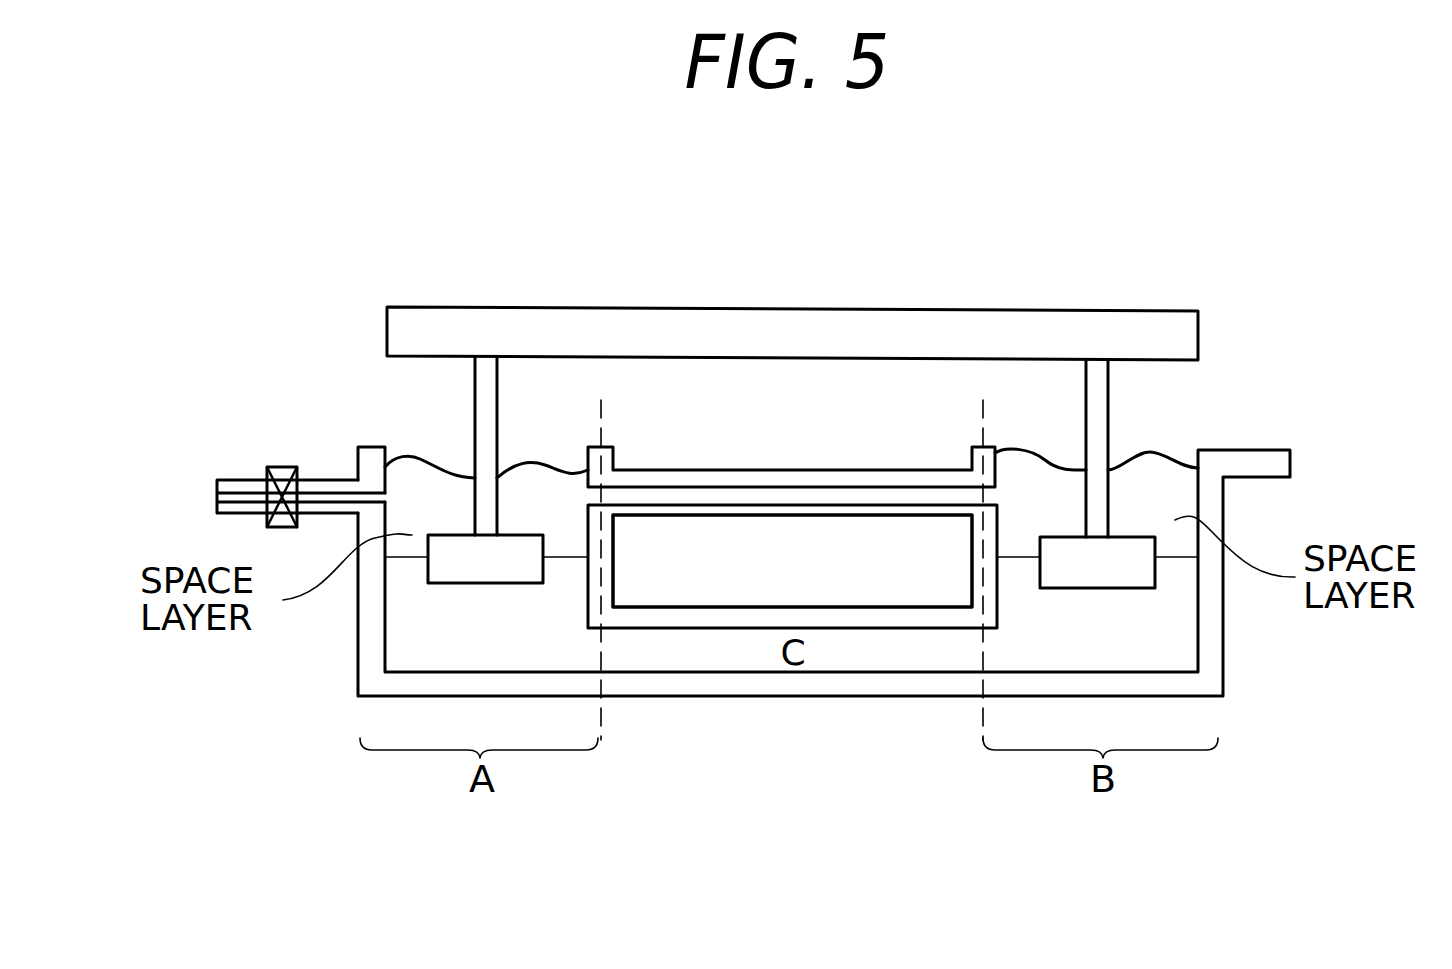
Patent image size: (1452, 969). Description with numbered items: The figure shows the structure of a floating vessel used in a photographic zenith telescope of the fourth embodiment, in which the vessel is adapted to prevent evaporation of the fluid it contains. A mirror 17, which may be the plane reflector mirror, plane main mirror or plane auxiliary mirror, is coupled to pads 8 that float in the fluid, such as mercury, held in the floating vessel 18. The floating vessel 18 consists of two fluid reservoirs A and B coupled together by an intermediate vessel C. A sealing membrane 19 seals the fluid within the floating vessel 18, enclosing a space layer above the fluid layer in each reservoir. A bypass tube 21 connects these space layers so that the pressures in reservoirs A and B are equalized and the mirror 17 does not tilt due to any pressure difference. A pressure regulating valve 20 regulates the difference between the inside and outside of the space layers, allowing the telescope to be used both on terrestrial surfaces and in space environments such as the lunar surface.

The pads 8 is at (517, 585).
The mirror 17 is at (1017, 311).
The floating vessel 18 is at (1226, 656).
The sealing membrane 19 is at (419, 458).
The pressure regulating valve 20 is at (283, 467).
The bypass tube 21 is at (745, 470).